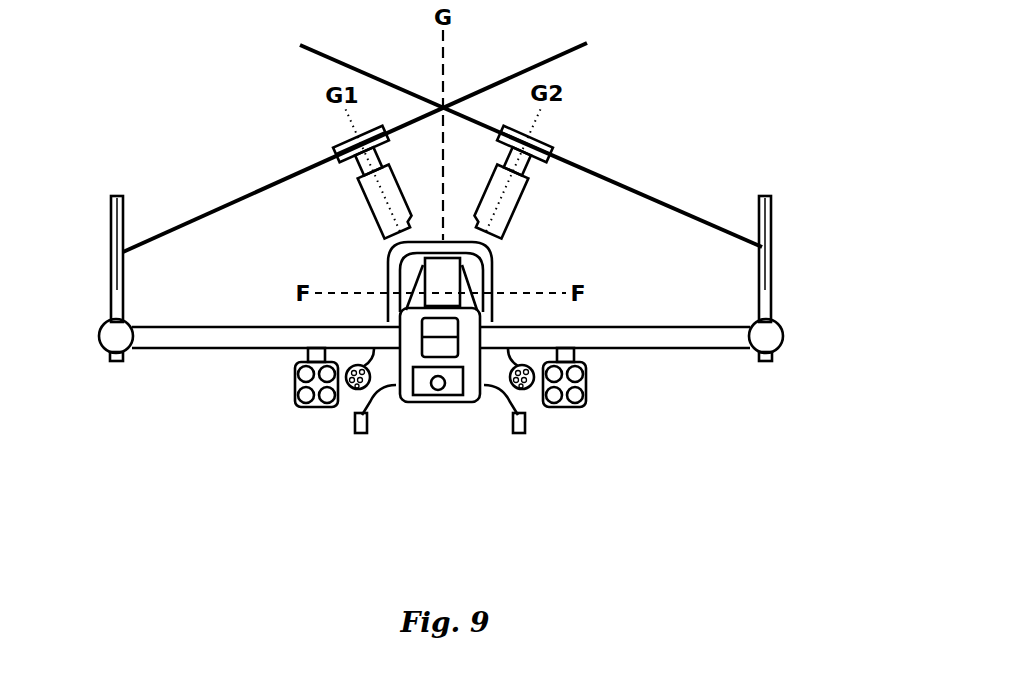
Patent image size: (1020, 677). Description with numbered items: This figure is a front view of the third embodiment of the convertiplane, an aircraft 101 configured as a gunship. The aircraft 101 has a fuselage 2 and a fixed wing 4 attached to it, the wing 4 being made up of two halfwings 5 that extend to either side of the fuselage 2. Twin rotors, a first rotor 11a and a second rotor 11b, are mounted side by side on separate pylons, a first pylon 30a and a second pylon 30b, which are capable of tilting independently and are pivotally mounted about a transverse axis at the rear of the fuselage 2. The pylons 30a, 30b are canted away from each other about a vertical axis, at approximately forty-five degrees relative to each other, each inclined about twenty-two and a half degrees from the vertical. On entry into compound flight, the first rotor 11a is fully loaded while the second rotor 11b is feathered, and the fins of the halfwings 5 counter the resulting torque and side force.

The aircraft 101 is at (637, 463).
The fuselage 2 is at (467, 350).
The wing 4 is at (233, 368).
The halfwing 5 is at (97, 289).
The first rotor 11a is at (210, 206).
The second rotor 11b is at (588, 168).
The first pylon 30a is at (360, 190).
The second pylon 30b is at (495, 227).